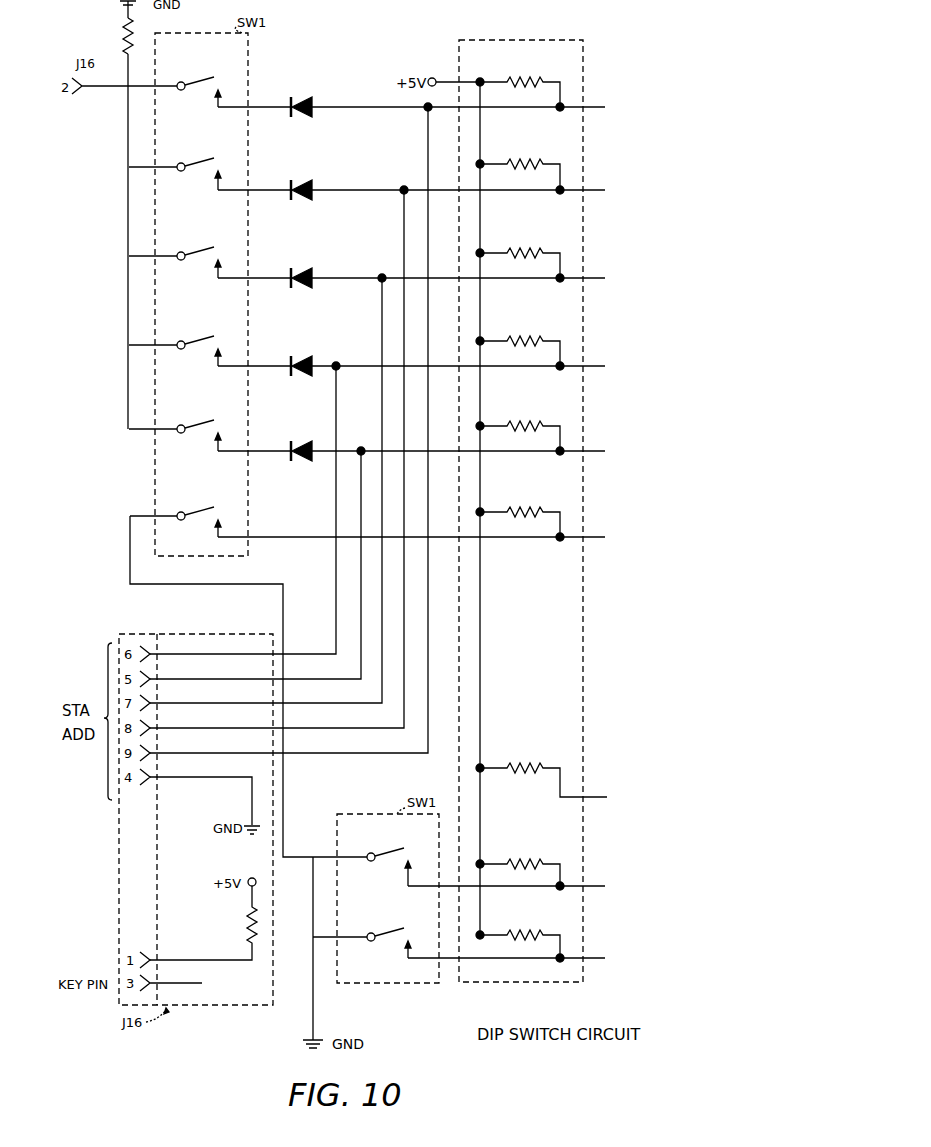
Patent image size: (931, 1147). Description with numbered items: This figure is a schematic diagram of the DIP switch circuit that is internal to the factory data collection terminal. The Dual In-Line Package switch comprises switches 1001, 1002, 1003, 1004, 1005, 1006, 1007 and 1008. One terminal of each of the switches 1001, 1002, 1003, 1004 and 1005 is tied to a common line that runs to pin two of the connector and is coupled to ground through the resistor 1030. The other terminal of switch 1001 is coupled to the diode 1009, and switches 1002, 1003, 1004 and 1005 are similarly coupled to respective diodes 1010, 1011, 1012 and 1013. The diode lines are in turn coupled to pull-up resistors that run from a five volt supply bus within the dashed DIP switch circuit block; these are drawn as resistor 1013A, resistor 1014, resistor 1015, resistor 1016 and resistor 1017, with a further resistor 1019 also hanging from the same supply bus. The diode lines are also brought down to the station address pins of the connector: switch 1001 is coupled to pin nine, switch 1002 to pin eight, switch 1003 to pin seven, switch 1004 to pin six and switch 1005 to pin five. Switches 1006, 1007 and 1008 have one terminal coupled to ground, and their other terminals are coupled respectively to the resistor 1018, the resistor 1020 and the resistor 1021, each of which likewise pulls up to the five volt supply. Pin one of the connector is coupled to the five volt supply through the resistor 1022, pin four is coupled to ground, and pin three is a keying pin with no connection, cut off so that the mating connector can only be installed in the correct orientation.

The switch 1001 is at (203, 75).
The switch 1002 is at (203, 156).
The switch 1003 is at (203, 245).
The switch 1004 is at (203, 334).
The switch 1005 is at (203, 418).
The switch 1006 is at (203, 505).
The switch 1007 is at (386, 846).
The switch 1008 is at (386, 926).
The diode 1009 is at (299, 102).
The diode 1010 is at (299, 185).
The diode 1011 is at (299, 273).
The diode 1012 is at (299, 361).
The diode 1013 is at (305, 442).
The resistor 1013A is at (536, 78).
The resistor 1014 is at (536, 160).
The resistor 1015 is at (536, 249).
The resistor 1016 is at (536, 337).
The resistor 1017 is at (536, 422).
The resistor 1018 is at (536, 508).
The resistor 1019 is at (536, 764).
The resistor 1020 is at (536, 860).
The resistor 1021 is at (536, 931).
The resistor 1022 is at (244, 921).
The resistor 1030 is at (122, 43).